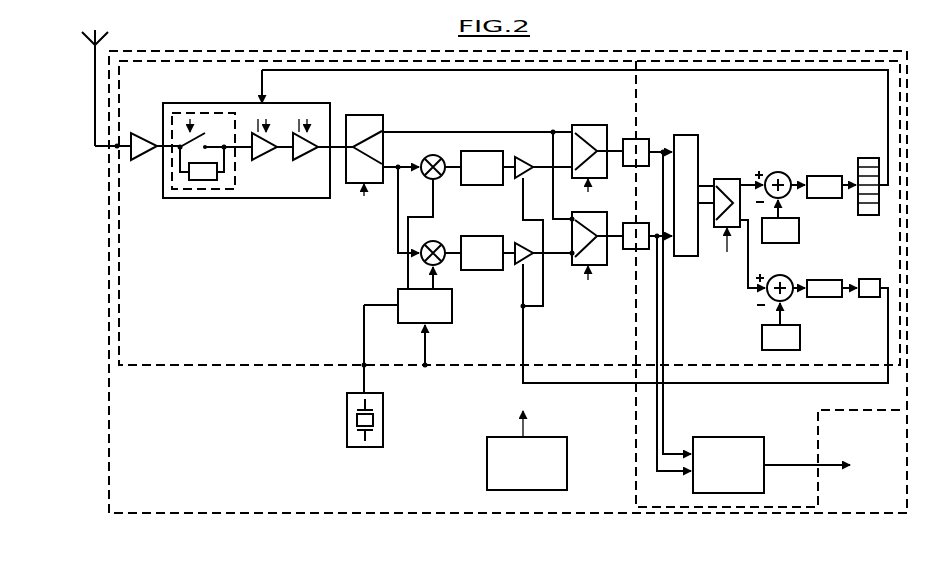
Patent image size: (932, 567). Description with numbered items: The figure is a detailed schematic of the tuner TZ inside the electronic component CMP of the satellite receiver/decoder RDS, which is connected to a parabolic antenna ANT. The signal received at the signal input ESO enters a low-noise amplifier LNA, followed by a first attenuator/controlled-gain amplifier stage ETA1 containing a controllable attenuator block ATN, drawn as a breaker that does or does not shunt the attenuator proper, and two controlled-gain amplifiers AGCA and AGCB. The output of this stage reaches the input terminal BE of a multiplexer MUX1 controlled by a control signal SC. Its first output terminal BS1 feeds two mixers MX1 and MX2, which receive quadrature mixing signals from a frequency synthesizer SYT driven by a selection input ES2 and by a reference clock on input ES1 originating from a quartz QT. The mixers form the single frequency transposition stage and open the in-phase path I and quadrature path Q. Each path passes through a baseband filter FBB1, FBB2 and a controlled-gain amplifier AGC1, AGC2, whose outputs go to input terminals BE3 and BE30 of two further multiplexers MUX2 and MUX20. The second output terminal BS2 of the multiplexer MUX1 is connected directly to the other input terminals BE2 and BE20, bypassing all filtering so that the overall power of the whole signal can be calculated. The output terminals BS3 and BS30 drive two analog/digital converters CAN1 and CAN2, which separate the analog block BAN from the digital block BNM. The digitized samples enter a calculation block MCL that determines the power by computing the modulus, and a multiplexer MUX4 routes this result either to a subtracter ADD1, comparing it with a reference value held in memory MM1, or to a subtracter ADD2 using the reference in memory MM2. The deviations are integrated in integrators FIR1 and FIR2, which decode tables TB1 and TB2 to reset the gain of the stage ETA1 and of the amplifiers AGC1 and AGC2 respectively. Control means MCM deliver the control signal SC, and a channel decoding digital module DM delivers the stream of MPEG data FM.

The satellite receiver/decoder RDS is at (220, 514).
The analog block BAN is at (351, 61).
The digital block BNM is at (750, 61).
The electronic component CMP is at (822, 490).
The parabolic antenna ANT is at (105, 44).
The signal input ESO is at (117, 145).
The low-noise amplifier LNA is at (147, 160).
The first attenuator/controlled-gain amplifier stage ETA1 is at (278, 199).
The controllable attenuator block ATN is at (205, 190).
The controlled-gain amplifier AGCA is at (263, 160).
The controlled-gain amplifier AGCB is at (310, 160).
The input terminal BE is at (349, 115).
The multiplexer MUX1 is at (375, 115).
The first output terminal BS1 is at (395, 167).
The second output terminal BS2 is at (398, 132).
The control signal SC is at (364, 197).
The mixer MX1 is at (441, 178).
The baseband filter FBB1 is at (482, 168).
The controlled-gain amplifier AGC1 is at (522, 156).
The input terminal BE2 is at (565, 131).
The multiplexer MUX2 is at (580, 125).
The output terminal BS3 is at (611, 150).
The input terminal BE3 is at (572, 170).
The analog/digital converter CAN1 is at (636, 139).
The in-phase path I is at (666, 150).
The calculation block MCL is at (698, 136).
The multiplexer MUX4 is at (725, 179).
The subtracter ADD1 is at (770, 174).
The memory MM1 is at (780, 221).
The integrator with programmable coefficients FIR1 is at (822, 176).
The reference table TB1 is at (868, 158).
The subtracter ADD2 is at (790, 300).
The memory MM2 is at (781, 326).
The integrator FIR2 is at (822, 280).
The second reference table TB2 is at (880, 279).
The mixer MX2 is at (443, 263).
The baseband filter FBB2 is at (482, 253).
The controlled-gain amplifier AGC2 is at (522, 243).
The multiplexer MUX20 is at (606, 270).
The input terminal BE20 is at (570, 256).
The input terminal BE30 is at (573, 263).
The output terminal BS30 is at (608, 250).
The analog/digital converter CAN2 is at (645, 250).
The quadrature path Q is at (658, 246).
The frequency synthesizer SYT is at (408, 251).
The input ES1 is at (364, 371).
The selection input ES2 is at (425, 372).
The quartz QT is at (383, 420).
The tuner TZ is at (264, 380).
The control means MCM is at (527, 463).
The channel decoding digital module DM is at (728, 465).
The stream of MPEG data FM is at (816, 449).